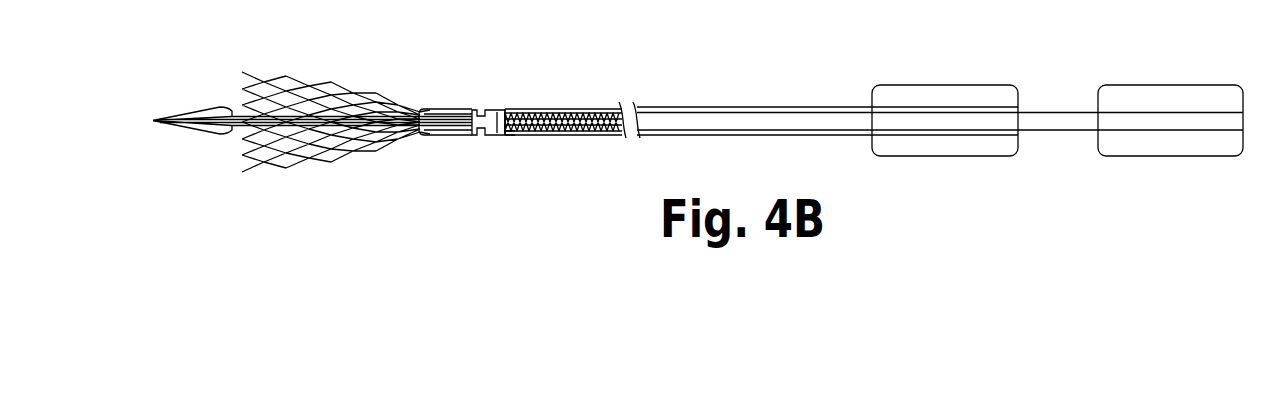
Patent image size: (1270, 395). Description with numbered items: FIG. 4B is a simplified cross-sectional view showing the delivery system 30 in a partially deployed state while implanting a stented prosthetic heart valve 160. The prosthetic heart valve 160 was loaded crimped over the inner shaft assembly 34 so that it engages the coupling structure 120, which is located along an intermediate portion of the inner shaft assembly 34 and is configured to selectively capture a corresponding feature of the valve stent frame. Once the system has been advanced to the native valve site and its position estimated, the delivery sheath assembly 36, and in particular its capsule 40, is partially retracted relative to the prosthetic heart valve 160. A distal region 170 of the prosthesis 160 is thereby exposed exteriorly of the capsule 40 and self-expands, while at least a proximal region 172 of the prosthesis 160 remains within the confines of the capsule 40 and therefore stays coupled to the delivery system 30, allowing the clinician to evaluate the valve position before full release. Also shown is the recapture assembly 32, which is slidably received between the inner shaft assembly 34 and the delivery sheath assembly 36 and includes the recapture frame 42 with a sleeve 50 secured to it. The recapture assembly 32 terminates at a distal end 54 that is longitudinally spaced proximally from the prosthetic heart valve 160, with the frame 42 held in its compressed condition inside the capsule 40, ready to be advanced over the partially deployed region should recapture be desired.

The delivery system 30 is at (931, 91).
The recapture assembly 32 is at (563, 127).
The inner shaft assembly 34 is at (498, 137).
The delivery sheath assembly 36 is at (660, 104).
The capsule 40 is at (457, 139).
The recapture frame 42 is at (580, 107).
The sleeve 50 is at (571, 127).
The distal end 54 is at (506, 137).
The coupling structure 120 is at (482, 107).
The stented prosthetic heart valve 160 is at (331, 129).
The distal region 170 is at (290, 166).
The proximal region 172 is at (420, 108).